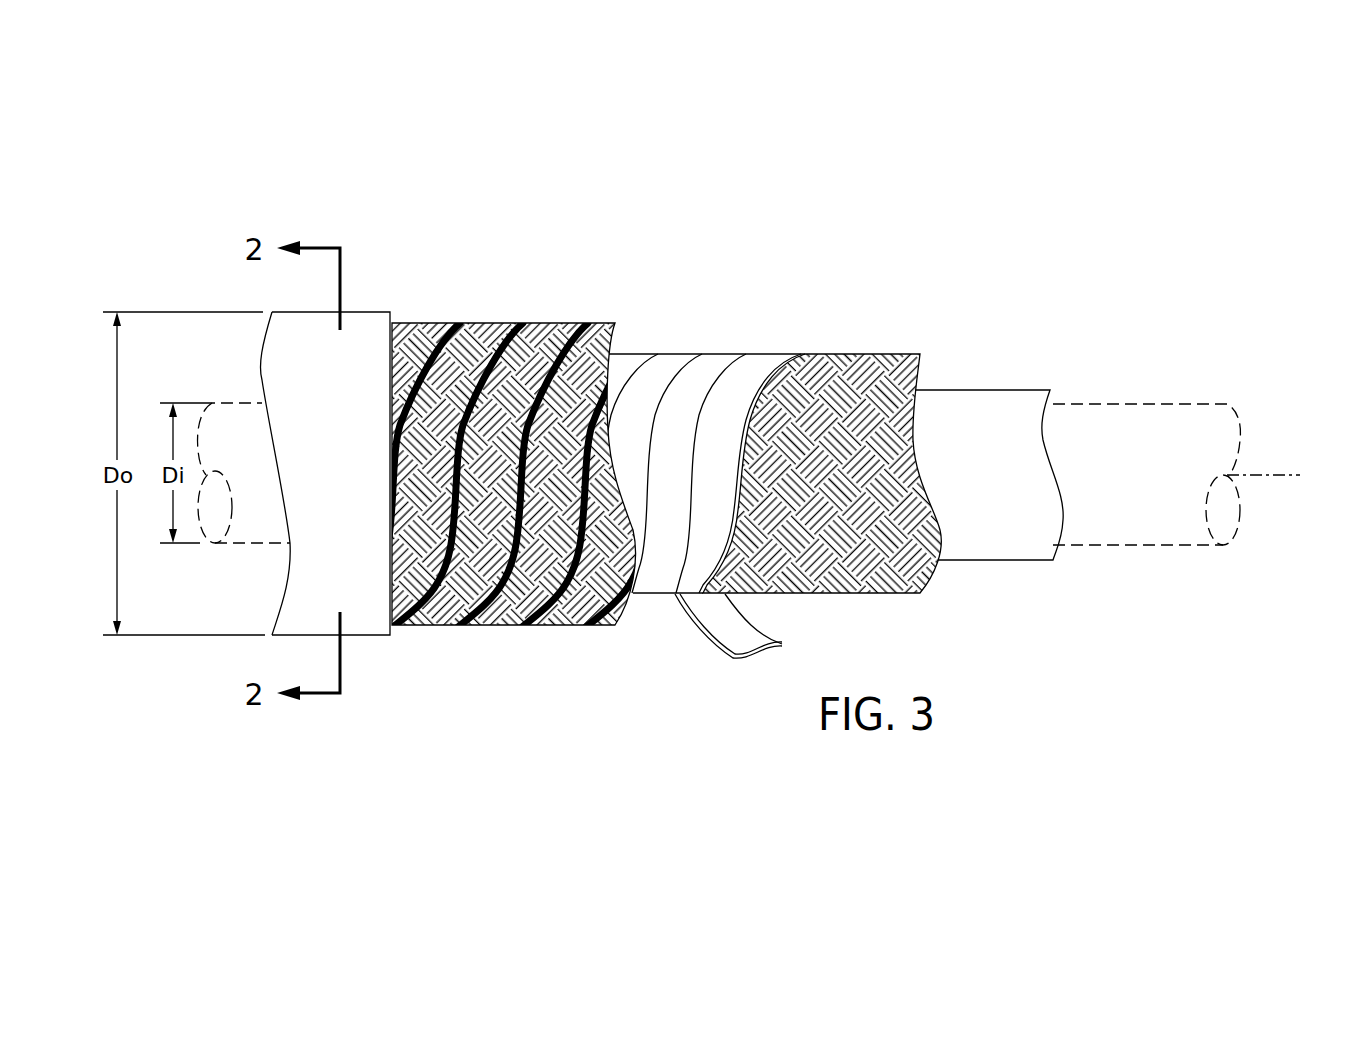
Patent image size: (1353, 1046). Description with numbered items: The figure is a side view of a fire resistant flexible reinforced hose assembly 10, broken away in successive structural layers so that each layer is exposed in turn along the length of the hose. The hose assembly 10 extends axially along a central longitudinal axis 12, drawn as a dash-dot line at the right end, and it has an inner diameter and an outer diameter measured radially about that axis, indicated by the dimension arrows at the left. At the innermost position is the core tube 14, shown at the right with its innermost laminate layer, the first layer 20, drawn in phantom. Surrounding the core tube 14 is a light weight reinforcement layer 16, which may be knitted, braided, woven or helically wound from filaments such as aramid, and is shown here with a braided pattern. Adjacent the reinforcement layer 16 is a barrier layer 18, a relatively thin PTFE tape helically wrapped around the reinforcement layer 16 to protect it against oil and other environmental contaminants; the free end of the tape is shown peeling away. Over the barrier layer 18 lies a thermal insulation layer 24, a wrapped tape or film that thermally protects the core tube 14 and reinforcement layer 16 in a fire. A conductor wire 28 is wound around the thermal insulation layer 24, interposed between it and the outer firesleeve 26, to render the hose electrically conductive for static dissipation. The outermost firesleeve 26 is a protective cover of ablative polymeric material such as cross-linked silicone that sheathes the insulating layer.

The hose assembly 10 is at (859, 298).
The central longitudinal axis 12 is at (1275, 475).
The core tube 14 is at (983, 562).
The reinforcement layer 16 is at (865, 595).
The barrier layer 18 is at (695, 638).
The first layer 20 is at (1137, 404).
The thermal insulation layer 24 is at (497, 627).
The firesleeve 26 is at (363, 637).
The conductor wire 28 is at (524, 323).